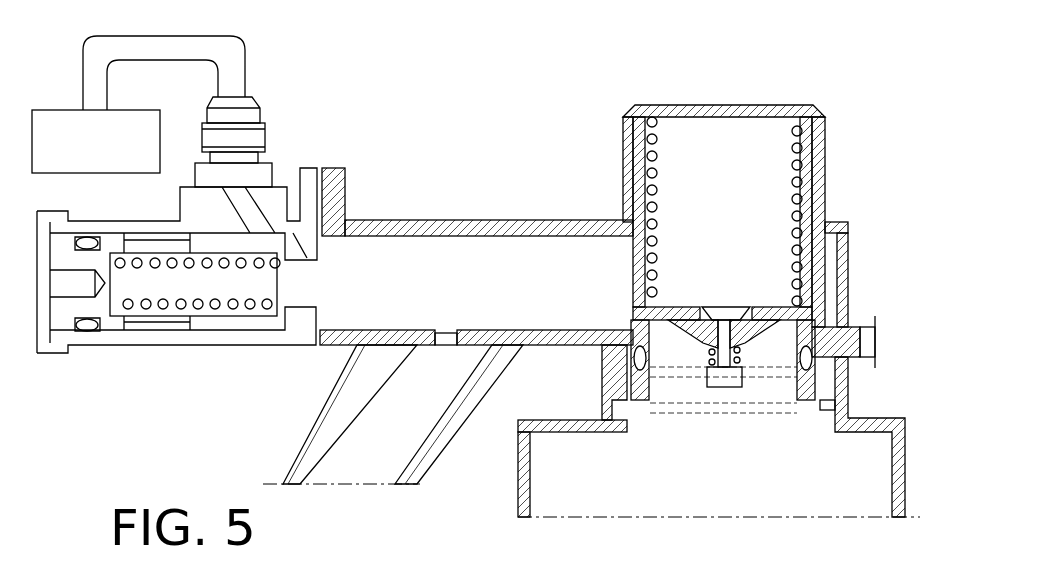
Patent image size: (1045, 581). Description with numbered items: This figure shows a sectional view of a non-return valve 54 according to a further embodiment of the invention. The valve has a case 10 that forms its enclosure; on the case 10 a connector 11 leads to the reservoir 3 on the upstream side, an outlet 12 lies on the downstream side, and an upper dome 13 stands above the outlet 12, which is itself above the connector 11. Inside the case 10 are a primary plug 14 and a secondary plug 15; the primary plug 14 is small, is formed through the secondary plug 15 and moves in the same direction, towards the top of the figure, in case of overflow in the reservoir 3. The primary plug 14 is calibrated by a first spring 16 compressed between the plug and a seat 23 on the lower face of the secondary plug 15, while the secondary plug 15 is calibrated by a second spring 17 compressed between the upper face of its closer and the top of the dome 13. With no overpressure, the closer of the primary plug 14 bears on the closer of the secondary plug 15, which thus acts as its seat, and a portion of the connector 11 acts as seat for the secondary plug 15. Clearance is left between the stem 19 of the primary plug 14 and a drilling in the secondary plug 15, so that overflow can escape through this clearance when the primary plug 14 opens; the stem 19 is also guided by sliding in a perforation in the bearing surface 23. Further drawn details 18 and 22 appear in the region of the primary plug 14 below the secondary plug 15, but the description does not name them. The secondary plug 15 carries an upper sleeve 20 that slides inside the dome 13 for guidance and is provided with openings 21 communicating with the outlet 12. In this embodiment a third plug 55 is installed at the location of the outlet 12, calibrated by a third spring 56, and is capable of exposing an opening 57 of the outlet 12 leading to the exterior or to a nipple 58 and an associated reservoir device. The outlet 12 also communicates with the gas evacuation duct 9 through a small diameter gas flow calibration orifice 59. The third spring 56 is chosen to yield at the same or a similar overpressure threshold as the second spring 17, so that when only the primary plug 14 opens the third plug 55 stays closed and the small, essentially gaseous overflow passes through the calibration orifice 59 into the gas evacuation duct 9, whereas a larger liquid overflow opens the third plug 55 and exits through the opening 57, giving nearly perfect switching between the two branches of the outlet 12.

The reservoir 3 is at (548, 420).
The gas evacuation duct 9 is at (330, 411).
The case 10 is at (848, 212).
The connector 11 is at (848, 377).
The outlet 12 is at (455, 255).
The upper dome 13 is at (832, 170).
The primary plug 14 is at (718, 307).
The secondary plug 15 is at (768, 307).
The first spring 16 is at (738, 357).
The second spring 17 is at (660, 172).
The seal sleeve 18 is at (776, 335).
The stem 19 is at (712, 366).
The upper sleeve 20 is at (822, 150).
The openings 21 is at (633, 277).
The stop block 22 is at (728, 388).
The seat 23 is at (703, 353).
The non-return valve 54 is at (790, 107).
The third plug 55 is at (247, 320).
The third spring 56 is at (162, 305).
The opening 57 is at (250, 192).
The nipple 58 is at (245, 36).
The calibration orifice 59 is at (447, 338).